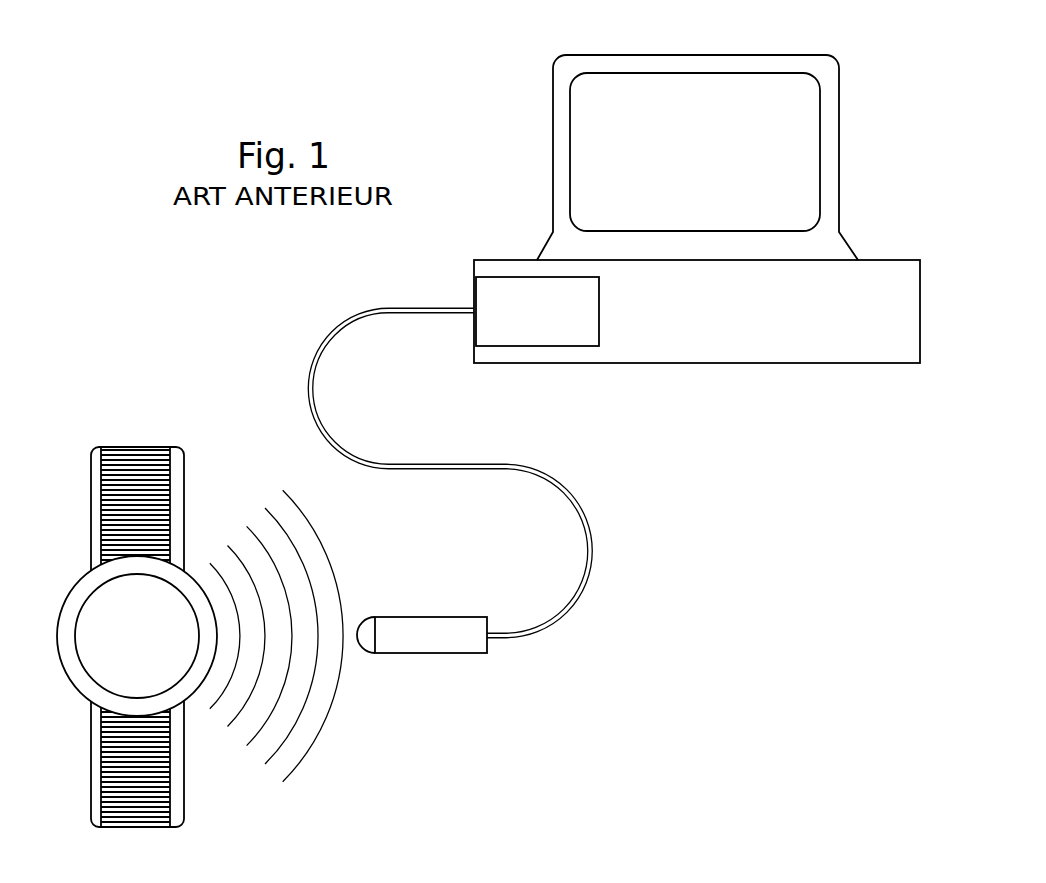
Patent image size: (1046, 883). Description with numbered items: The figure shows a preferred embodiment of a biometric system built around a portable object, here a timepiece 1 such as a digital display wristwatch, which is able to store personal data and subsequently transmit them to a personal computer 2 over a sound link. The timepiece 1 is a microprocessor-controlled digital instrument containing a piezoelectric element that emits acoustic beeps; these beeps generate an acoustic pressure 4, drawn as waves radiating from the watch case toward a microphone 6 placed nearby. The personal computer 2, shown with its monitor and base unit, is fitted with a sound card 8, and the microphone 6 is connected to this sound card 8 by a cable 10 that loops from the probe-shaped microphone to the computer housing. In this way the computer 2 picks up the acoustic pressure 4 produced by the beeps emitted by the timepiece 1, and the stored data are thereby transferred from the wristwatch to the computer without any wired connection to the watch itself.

The timepiece 1 is at (146, 649).
The personal computer 2 is at (883, 260).
The acoustic pressure 4 is at (320, 545).
The microphone 6 is at (419, 654).
The sound card 8 is at (540, 328).
The cable 10 is at (592, 552).